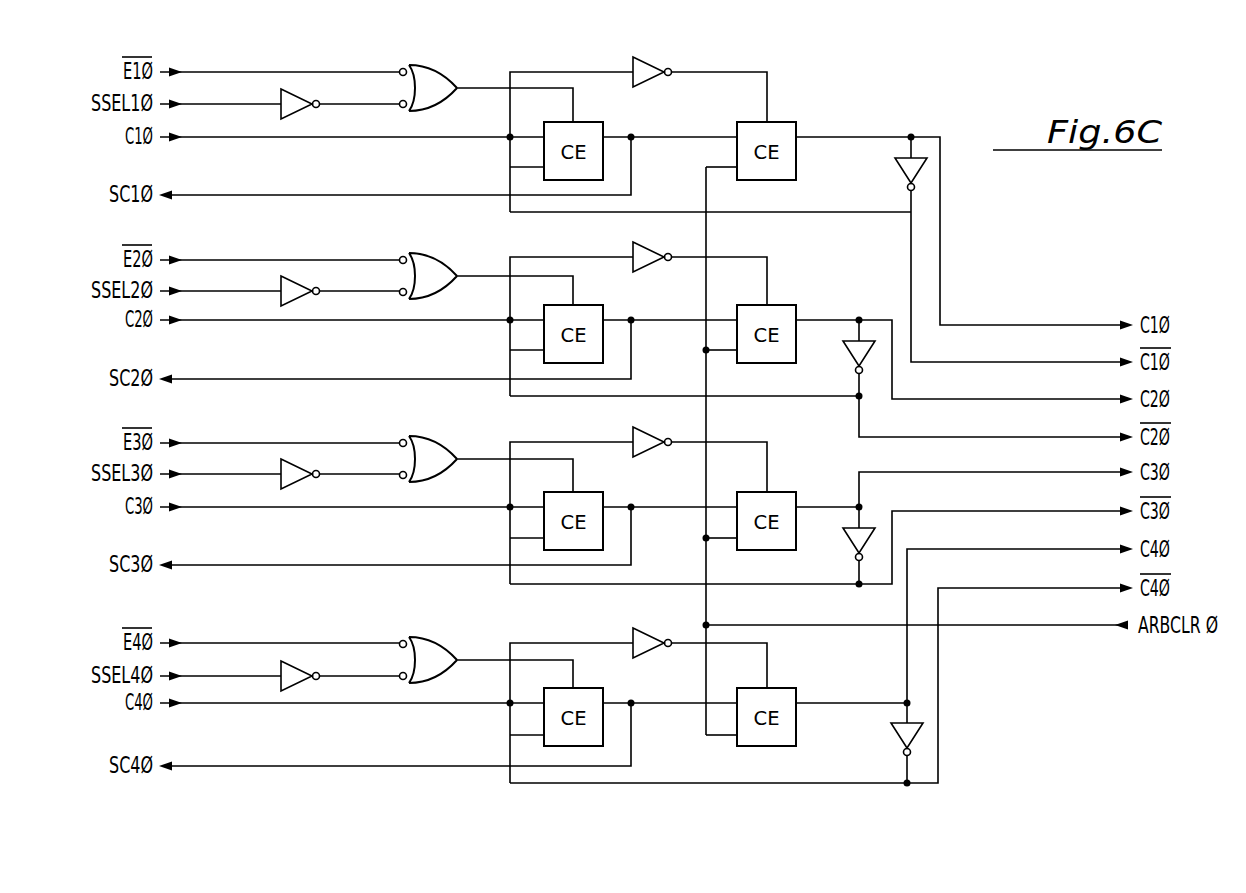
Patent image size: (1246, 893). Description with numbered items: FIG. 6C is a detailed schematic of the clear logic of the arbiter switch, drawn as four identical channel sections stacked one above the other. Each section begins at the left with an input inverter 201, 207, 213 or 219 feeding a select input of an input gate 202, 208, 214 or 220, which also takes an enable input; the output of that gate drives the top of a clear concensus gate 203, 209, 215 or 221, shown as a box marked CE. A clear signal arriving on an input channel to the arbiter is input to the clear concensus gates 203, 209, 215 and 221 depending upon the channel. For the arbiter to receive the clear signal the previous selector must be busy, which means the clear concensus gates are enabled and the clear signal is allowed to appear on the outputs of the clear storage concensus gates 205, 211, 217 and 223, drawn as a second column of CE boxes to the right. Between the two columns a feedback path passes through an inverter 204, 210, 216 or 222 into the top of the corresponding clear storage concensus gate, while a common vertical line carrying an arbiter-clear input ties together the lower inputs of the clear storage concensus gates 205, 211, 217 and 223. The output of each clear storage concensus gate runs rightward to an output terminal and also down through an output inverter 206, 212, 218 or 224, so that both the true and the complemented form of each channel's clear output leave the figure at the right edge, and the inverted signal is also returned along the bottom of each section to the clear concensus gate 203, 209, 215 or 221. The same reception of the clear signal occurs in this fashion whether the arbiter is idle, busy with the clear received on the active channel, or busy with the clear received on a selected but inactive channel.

The inverter 201 is at (282, 108).
The OR gate 202 is at (437, 80).
The clear concensus gate 203 is at (591, 126).
The inverter 204 is at (655, 79).
The clear storage concensus gate 205 is at (786, 126).
The inverter 206 is at (904, 168).
The inverter 207 is at (282, 296).
The OR gate 208 is at (440, 268).
The clear concensus gate 209 is at (603, 307).
The inverter 210 is at (661, 229).
The clear storage concensus gate 211 is at (780, 310).
The inverter 212 is at (853, 353).
The inverter 213 is at (282, 479).
The OR gate 214 is at (440, 451).
The clear concensus gate 215 is at (591, 495).
The inverter 216 is at (650, 440).
The clear storage concensus gate 217 is at (778, 494).
The inverter 218 is at (855, 543).
The inverter 219 is at (283, 681).
The OR gate 220 is at (440, 652).
The clear concensus gate 221 is at (584, 694).
The inverter 222 is at (645, 640).
The clear storage concensus gate 223 is at (776, 698).
The inverter 224 is at (900, 735).